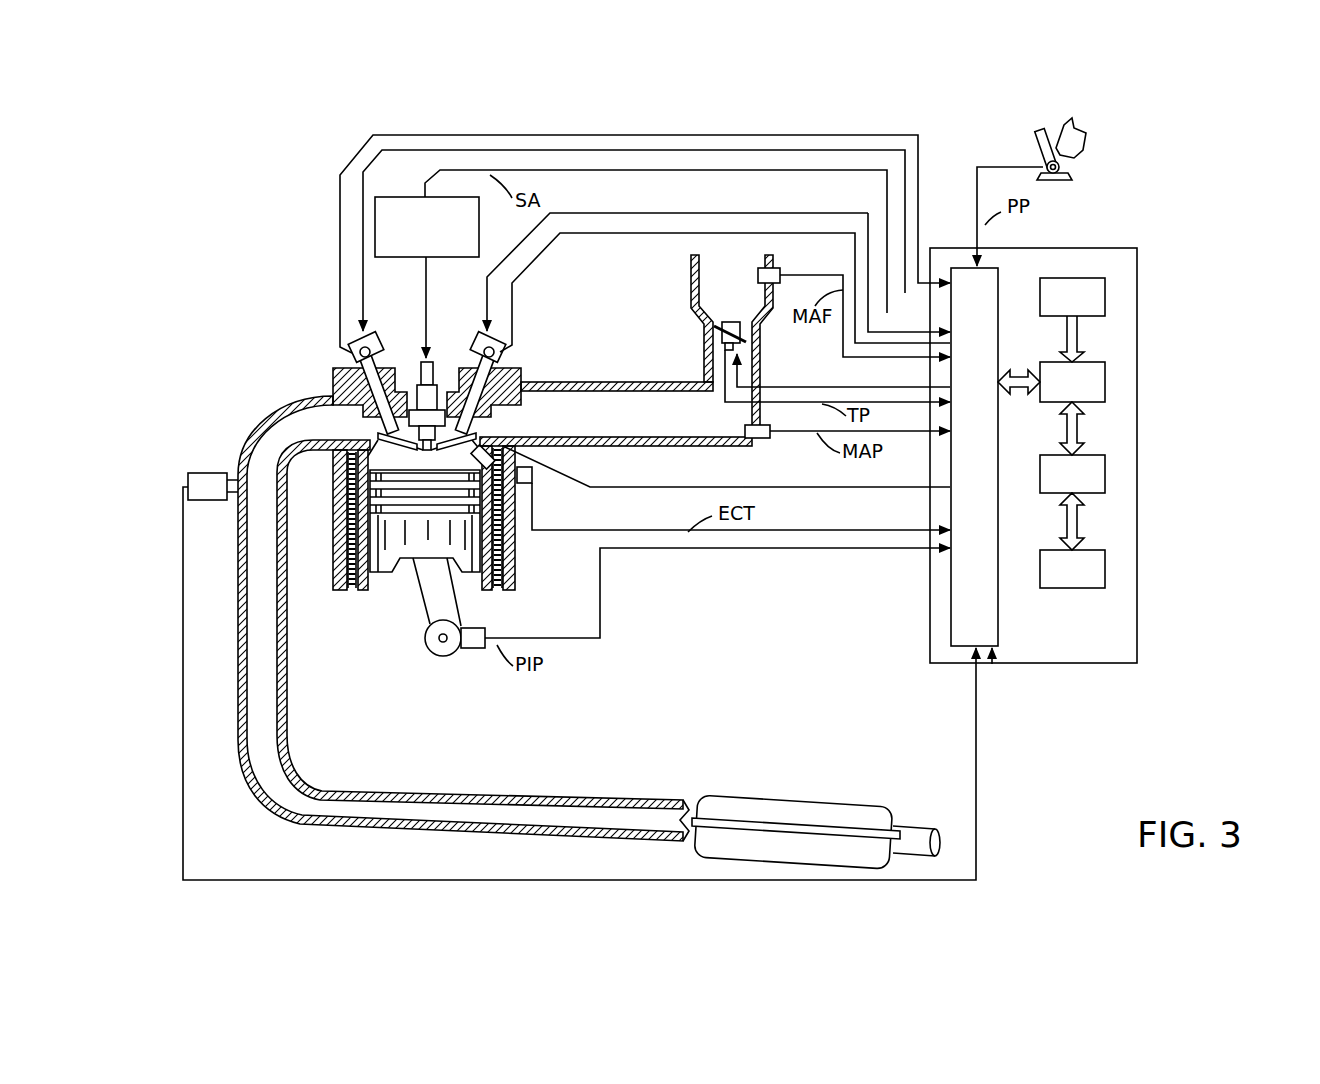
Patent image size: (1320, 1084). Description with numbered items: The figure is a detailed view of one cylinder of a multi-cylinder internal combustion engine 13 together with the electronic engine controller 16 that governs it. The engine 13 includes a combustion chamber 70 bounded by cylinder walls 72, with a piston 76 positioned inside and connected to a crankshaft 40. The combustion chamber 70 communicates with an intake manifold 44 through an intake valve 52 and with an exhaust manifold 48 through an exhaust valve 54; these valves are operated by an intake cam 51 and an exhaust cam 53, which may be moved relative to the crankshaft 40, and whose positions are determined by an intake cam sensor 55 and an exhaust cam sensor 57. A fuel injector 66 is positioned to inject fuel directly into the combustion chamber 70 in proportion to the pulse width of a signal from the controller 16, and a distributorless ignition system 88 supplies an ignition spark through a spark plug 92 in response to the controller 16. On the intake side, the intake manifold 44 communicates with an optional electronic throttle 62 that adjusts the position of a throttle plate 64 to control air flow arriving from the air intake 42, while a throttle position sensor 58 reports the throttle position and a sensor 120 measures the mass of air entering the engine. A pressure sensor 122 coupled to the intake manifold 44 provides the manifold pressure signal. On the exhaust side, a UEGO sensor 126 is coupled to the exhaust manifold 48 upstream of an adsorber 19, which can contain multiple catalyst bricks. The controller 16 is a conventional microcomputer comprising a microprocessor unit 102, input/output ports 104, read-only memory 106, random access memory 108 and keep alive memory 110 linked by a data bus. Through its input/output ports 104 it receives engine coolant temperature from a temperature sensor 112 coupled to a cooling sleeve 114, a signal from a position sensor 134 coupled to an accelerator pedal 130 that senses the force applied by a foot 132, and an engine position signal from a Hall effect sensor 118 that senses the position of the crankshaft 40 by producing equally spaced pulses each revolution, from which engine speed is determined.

The internal combustion engine 13 is at (268, 321).
The electronic engine controller 16 is at (1137, 251).
The adsorber 19 is at (707, 795).
The crankshaft 40 is at (440, 655).
The air intake 42 is at (745, 303).
The intake manifold 44 is at (685, 427).
The exhaust manifold 48 is at (321, 435).
The intake cam 51 is at (478, 340).
The intake valve 52 is at (470, 428).
The exhaust cam 53 is at (372, 340).
The exhaust valve 54 is at (384, 432).
The intake cam sensor 55 is at (499, 353).
The exhaust cam sensor 57 is at (353, 351).
The throttle position sensor 58 is at (704, 354).
The electronic throttle 62 is at (760, 334).
The throttle plate 64 is at (714, 329).
The fuel injector 66 is at (521, 452).
The combustion chamber 70 is at (423, 457).
The cylinder walls 72 is at (372, 584).
The piston 76 is at (408, 548).
The distributorless ignition system 88 is at (383, 197).
The spark plug 92 is at (431, 365).
The microprocessor unit 102 is at (1105, 378).
The input/output ports 104 is at (998, 275).
The read-only memory 106 is at (1105, 296).
The random access memory 108 is at (1105, 471).
The keep alive memory 110 is at (1105, 566).
The temperature sensor 112 is at (528, 484).
The cooling sleeve 114 is at (506, 548).
The Hall effect sensor 118 is at (482, 627).
The air mass sensor 120 is at (780, 268).
The pressure sensor 122 is at (760, 438).
The UEGO sensor 126 is at (188, 479).
The accelerator pedal 130 is at (1037, 142).
The foot 132 is at (1082, 133).
The position sensor 134 is at (1063, 168).